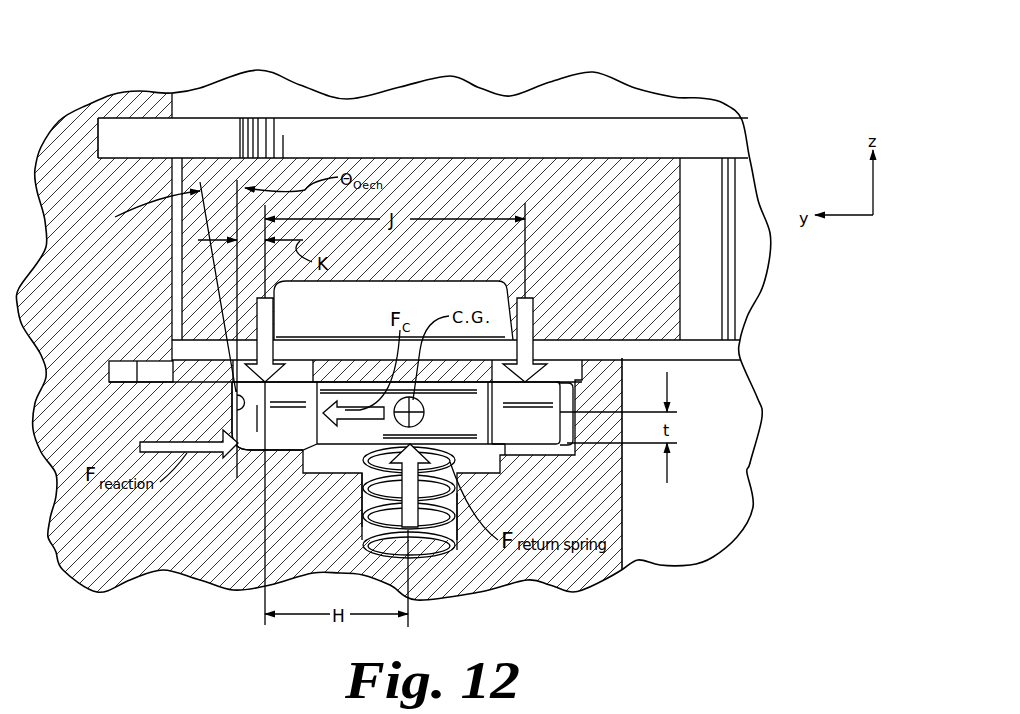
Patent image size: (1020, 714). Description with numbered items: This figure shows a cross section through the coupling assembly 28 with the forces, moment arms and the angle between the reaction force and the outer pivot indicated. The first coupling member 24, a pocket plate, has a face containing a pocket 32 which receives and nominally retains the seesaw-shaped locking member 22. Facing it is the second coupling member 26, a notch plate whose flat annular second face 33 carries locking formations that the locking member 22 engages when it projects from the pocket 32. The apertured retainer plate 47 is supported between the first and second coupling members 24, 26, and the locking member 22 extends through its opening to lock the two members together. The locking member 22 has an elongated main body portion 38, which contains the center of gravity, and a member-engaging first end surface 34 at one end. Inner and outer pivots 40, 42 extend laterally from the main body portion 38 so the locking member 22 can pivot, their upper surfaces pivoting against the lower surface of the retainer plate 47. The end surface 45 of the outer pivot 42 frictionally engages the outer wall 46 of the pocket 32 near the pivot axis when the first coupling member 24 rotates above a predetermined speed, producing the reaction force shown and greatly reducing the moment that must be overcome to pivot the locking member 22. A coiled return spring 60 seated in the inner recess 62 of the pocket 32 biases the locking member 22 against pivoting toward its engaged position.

The coupling assembly 28 is at (603, 58).
The second coupling member 26 is at (667, 180).
The second face 33 is at (632, 342).
The retainer plate 47 is at (158, 376).
The first coupling member 24 is at (626, 537).
The outer pivot 42 is at (262, 428).
The locking member 22 is at (342, 447).
The main body portion 38 is at (287, 451).
The outer wall 46 is at (237, 415).
The end surface 45 is at (233, 418).
The first end surface 34 is at (460, 425).
The pocket 32 is at (503, 453).
The inner pivot 40 is at (540, 396).
The inner recess 62 is at (362, 530).
The coiled return spring 60 is at (437, 557).